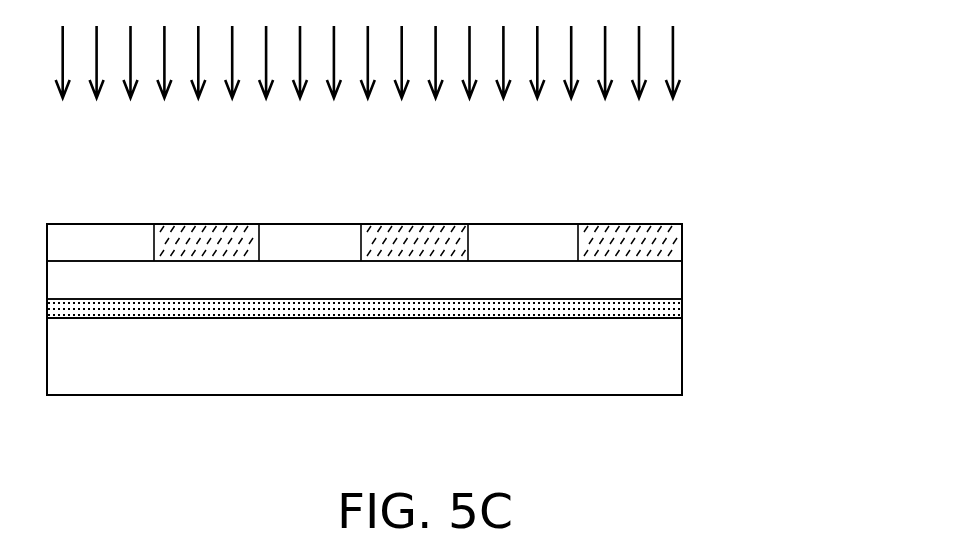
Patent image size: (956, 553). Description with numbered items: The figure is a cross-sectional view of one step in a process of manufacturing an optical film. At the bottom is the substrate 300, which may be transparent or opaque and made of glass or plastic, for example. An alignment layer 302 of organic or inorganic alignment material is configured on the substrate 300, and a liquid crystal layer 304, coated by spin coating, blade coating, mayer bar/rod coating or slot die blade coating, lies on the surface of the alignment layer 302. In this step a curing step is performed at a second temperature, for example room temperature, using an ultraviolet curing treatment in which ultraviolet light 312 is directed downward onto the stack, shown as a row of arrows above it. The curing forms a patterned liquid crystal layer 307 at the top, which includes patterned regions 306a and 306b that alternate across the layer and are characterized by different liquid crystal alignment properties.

The ultraviolet light 312 is at (674, 62).
The substrate 300 is at (663, 373).
The alignment layer 302 is at (663, 305).
The liquid crystal layer 304 is at (663, 277).
The patterned liquid crystal layer 307 is at (761, 125).
The patterned region 306a is at (538, 238).
The patterned region 306b is at (645, 237).